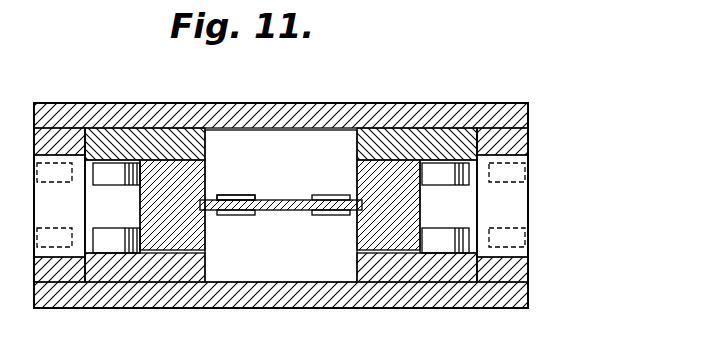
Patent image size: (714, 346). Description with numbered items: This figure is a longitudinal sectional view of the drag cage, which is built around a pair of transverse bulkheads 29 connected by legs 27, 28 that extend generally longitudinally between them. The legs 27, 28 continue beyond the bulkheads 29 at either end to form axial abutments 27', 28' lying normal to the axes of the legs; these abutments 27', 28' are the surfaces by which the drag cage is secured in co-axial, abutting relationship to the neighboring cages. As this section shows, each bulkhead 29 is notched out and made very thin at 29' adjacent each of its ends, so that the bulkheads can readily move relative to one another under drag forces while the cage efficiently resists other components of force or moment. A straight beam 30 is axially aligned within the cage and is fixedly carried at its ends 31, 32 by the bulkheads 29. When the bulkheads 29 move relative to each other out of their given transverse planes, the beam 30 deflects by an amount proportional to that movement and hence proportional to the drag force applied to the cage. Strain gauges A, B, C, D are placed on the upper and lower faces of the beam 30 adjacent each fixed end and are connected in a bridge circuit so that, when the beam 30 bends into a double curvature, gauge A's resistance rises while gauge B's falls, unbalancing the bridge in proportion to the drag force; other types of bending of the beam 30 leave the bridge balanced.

The leg 27 is at (281, 98).
The axial abutment 27' is at (60, 114).
The leg 28 is at (281, 308).
The axial abutment 28' is at (526, 276).
The transverse bulkhead 29 is at (281, 189).
The notched thin portion of bulkhead 29' is at (278, 208).
The straight beam 30 is at (281, 228).
The beam end 31 is at (215, 196).
The beam end 32 is at (317, 173).
The strain gauge A is at (255, 196).
The strain gauge B is at (281, 206).
The strain gauge C is at (244, 215).
The strain gauge D is at (281, 213).